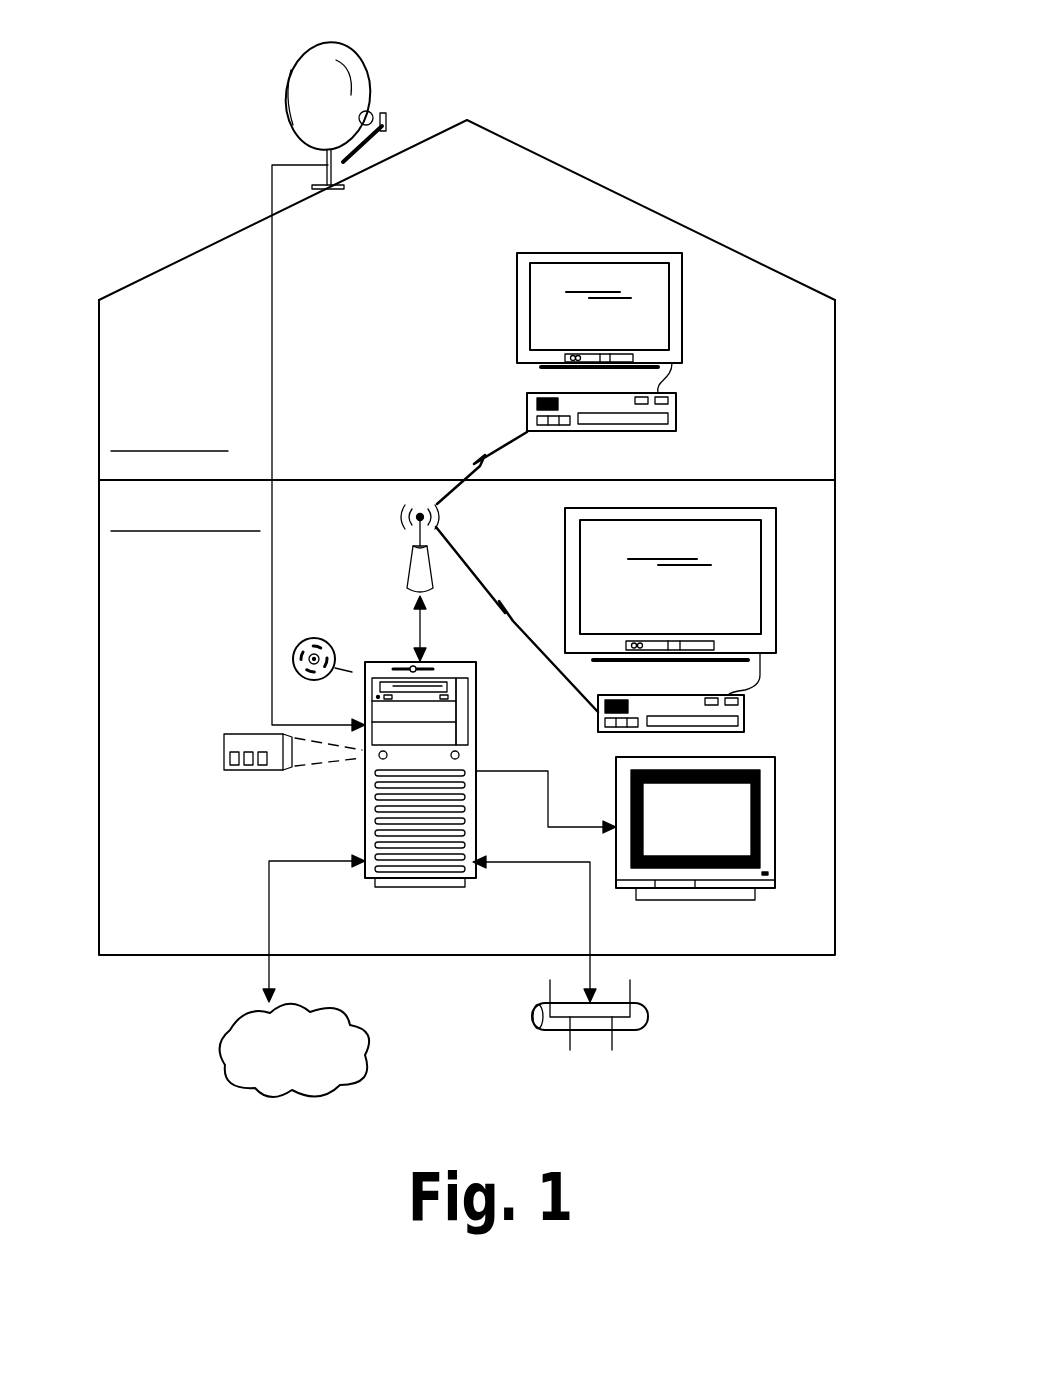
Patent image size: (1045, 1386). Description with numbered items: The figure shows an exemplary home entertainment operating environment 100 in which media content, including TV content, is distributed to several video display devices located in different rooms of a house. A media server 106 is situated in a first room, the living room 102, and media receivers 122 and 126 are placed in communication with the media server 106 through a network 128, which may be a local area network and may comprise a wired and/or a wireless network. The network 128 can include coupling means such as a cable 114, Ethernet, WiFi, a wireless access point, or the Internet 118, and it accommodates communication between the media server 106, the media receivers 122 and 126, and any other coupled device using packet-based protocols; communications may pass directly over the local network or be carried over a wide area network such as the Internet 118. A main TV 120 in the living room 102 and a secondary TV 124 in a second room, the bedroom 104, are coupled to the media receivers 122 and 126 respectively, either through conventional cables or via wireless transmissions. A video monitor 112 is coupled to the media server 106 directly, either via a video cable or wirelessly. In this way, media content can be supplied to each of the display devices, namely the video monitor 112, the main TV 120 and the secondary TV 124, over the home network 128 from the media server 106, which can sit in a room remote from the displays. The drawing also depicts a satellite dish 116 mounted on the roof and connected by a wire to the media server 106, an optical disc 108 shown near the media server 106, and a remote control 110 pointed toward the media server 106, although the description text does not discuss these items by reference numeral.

The home entertainment operating environment 100 is at (677, 120).
The living room 102 is at (757, 955).
The bedroom 104 is at (233, 234).
The media server 106 is at (388, 662).
The optical disc 108 is at (302, 638).
The remote control 110 is at (224, 745).
The video monitor 112 is at (775, 827).
The cable 114 is at (648, 1016).
The satellite dish 116 is at (313, 63).
The Internet 118 is at (212, 1054).
The main TV 120 is at (776, 583).
The media receiver 122 is at (744, 712).
The secondary TV 124 is at (586, 253).
The media receiver 126 is at (676, 421).
The network 128 is at (408, 572).